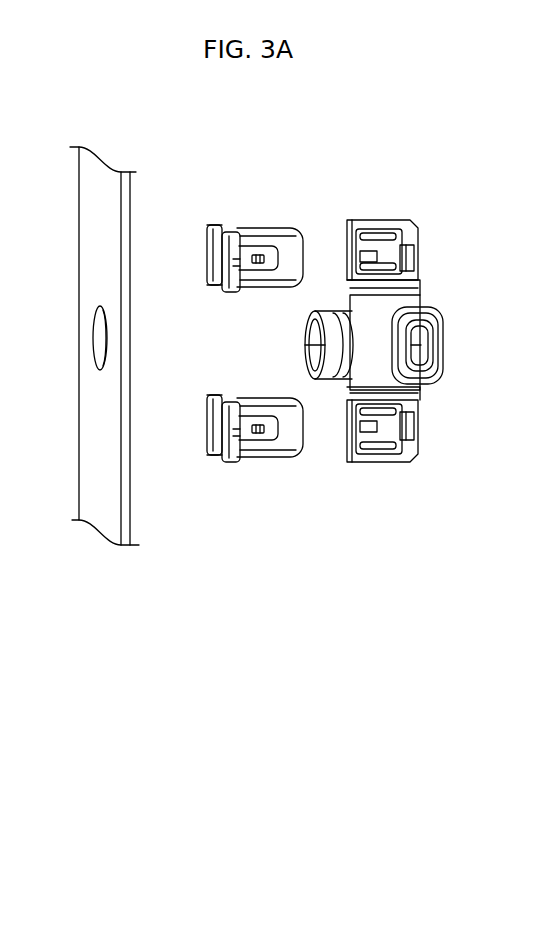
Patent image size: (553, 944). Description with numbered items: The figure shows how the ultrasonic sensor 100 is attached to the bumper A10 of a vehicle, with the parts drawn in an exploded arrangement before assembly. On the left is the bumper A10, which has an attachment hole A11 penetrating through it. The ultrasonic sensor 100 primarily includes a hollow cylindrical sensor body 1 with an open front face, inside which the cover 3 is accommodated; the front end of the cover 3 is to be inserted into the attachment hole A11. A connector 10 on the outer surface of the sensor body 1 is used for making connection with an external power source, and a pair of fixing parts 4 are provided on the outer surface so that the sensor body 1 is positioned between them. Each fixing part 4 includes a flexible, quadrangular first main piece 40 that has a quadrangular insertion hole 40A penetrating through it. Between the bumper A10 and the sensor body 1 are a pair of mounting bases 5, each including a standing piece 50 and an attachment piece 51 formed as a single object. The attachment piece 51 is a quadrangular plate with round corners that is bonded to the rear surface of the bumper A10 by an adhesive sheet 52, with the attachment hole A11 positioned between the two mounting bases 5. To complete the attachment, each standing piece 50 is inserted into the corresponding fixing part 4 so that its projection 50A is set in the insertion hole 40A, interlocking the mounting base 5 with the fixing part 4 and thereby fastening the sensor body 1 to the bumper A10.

The sensor body 1 is at (431, 336).
The cover 3 is at (292, 344).
The fixing part 4 is at (417, 345).
The mounting base 5 is at (248, 342).
The connector 10 is at (425, 358).
The first main piece 40 is at (398, 345).
The insertion hole 40A is at (366, 250).
The standing piece 50 is at (287, 354).
The projection 50A is at (258, 253).
The attachment piece 51 is at (220, 221).
The adhesive sheet 52 is at (210, 255).
The ultrasonic sensor 100 is at (442, 356).
The bumper A10 is at (100, 447).
The attachment hole A11 is at (98, 340).